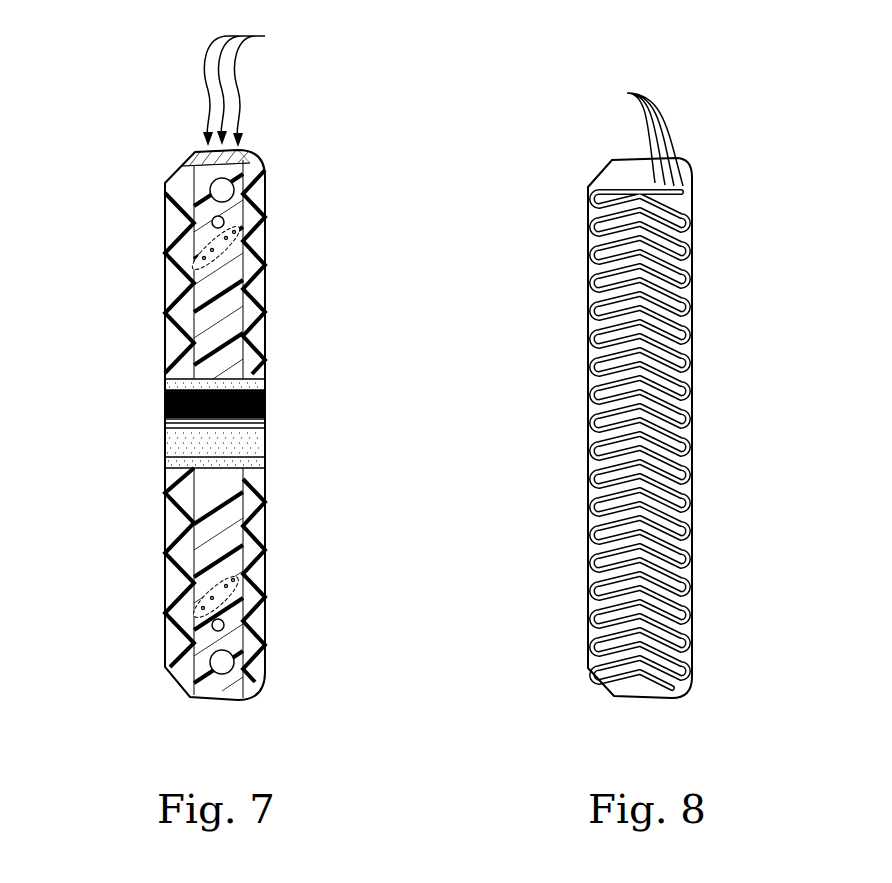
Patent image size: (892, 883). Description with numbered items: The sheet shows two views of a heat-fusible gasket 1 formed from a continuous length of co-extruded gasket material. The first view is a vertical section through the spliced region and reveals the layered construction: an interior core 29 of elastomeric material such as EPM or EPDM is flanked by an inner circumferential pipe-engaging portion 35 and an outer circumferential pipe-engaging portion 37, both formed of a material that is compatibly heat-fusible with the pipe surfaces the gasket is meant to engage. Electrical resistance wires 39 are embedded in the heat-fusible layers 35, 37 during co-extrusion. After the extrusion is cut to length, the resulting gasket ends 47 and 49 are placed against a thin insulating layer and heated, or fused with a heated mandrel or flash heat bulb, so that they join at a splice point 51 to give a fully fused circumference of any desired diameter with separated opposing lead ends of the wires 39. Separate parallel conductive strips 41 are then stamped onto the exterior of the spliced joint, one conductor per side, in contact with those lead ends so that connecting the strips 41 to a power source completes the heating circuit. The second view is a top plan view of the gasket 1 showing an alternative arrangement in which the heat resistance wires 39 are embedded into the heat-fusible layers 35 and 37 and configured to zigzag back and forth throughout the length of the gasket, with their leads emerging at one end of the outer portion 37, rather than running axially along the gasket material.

In FIG. 7, the gasket 1 is at (105, 218).
In FIG. 8, the gasket 1 is at (730, 228).
In FIG. 7, the interior core 29 is at (258, 165).
In FIG. 7, the inner circumferential pipe-engaging portion 35 is at (255, 262).
In FIG. 7, the outer circumferential pipe-engaging portion 37 is at (234, 151).
In FIG. 8, the outer circumferential pipe-engaging portion 37 is at (613, 180).
In FIG. 7, the electrical resistance wires 39 is at (226, 583).
In FIG. 8, the electrical resistance wires 39 is at (627, 93).
In FIG. 7, the conductive strips 41 is at (265, 445).
In FIG. 7, the gasket end 47 is at (165, 419).
In FIG. 7, the gasket end 49 is at (165, 427).
In FIG. 7, the splice point 51 is at (165, 423).